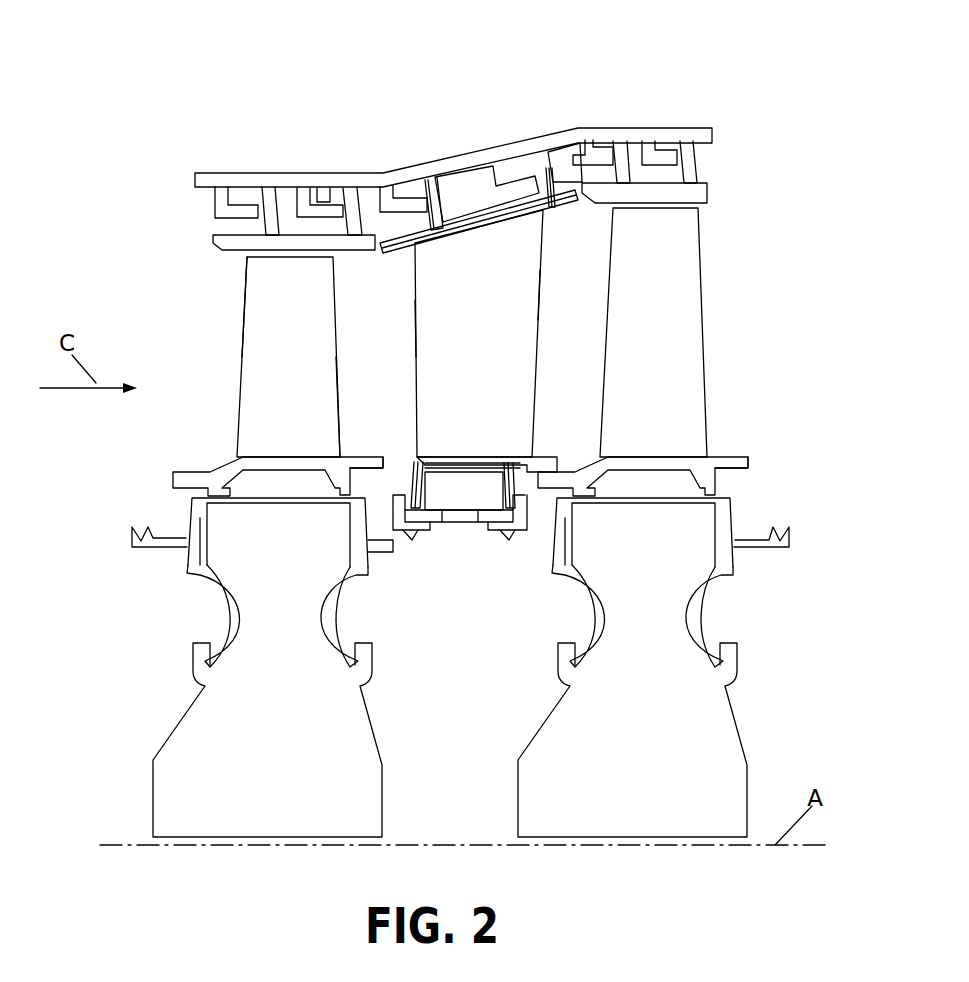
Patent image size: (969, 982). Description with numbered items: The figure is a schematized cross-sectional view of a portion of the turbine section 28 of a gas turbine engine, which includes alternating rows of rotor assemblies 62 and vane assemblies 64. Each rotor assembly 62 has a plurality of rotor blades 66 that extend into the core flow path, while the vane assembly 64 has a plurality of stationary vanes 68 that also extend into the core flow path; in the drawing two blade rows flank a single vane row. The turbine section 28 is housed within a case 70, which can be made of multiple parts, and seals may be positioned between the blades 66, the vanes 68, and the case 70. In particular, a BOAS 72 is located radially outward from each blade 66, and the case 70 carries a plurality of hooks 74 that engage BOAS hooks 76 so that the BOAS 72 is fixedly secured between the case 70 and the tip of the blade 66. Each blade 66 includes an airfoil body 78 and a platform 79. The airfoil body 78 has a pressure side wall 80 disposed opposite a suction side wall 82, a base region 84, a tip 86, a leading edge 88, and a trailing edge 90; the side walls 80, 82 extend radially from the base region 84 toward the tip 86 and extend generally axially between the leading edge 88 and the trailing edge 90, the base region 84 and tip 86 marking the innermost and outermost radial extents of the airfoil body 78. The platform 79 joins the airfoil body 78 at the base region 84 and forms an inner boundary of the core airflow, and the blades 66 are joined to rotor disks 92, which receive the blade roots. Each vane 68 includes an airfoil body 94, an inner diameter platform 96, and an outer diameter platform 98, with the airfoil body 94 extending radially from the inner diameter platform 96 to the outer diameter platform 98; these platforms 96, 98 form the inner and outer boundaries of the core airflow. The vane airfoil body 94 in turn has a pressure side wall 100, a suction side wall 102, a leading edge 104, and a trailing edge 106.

The turbine section 28 is at (607, 60).
The rotor assembly 62 is at (152, 573).
The vane assembly 64 is at (460, 558).
The rotor blade 66 is at (160, 426).
The stationary vane 68 is at (393, 299).
The case 70 is at (378, 172).
The BOAS 72 is at (213, 243).
The hook 74 is at (212, 207).
The BOAS hook 76 is at (273, 198).
The airfoil body 78 is at (281, 370).
The platform 79 is at (351, 458).
The pressure side wall 80 is at (258, 322).
The suction side wall 82 is at (282, 281).
The base region 84 is at (262, 455).
The tip 86 is at (298, 255).
The leading edge 88 is at (239, 410).
The trailing edge 90 is at (339, 386).
The rotor disk 92 is at (254, 735).
The airfoil body 94 is at (454, 331).
The inner diameter platform 96 is at (538, 457).
The outer diameter platform 98 is at (553, 208).
The pressure side wall 100 is at (520, 402).
The suction side wall 102 is at (508, 346).
The leading edge 104 is at (415, 347).
The trailing edge 106 is at (540, 298).